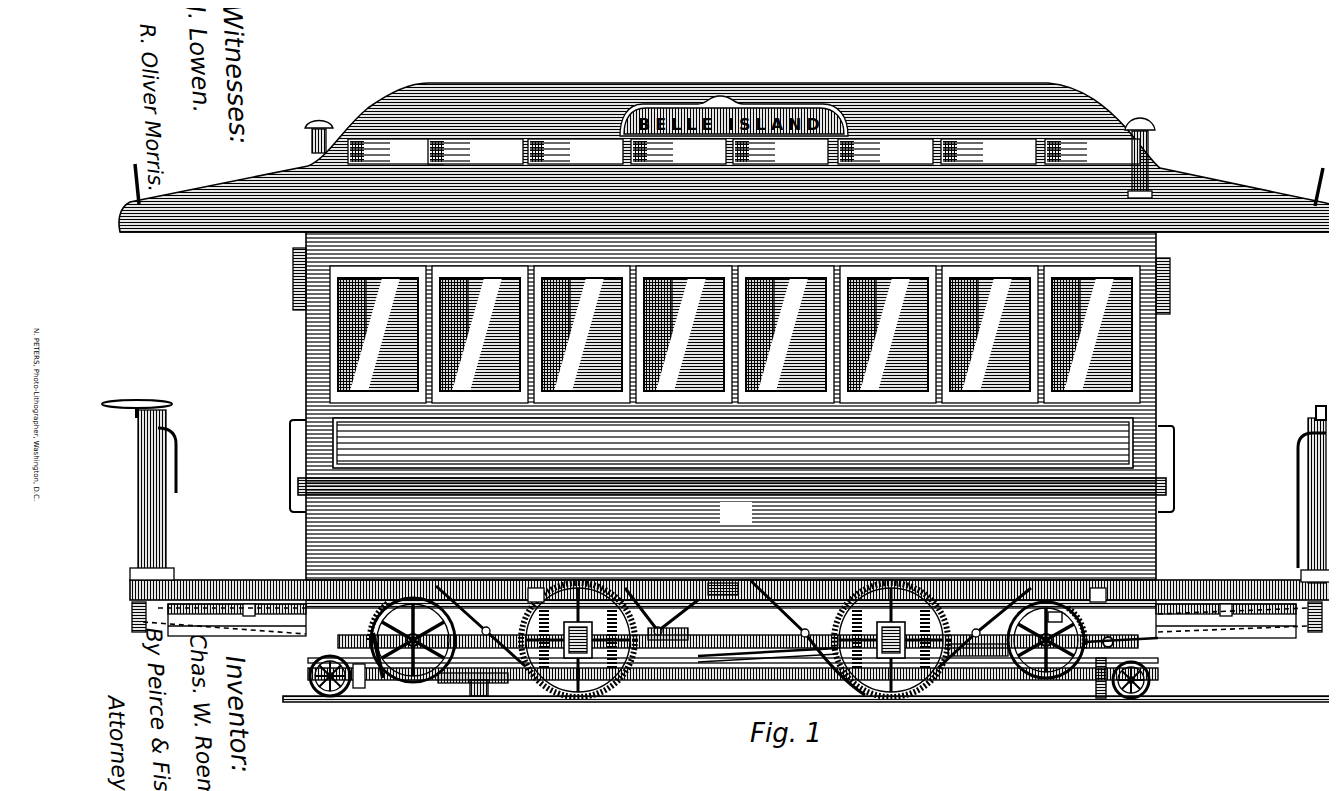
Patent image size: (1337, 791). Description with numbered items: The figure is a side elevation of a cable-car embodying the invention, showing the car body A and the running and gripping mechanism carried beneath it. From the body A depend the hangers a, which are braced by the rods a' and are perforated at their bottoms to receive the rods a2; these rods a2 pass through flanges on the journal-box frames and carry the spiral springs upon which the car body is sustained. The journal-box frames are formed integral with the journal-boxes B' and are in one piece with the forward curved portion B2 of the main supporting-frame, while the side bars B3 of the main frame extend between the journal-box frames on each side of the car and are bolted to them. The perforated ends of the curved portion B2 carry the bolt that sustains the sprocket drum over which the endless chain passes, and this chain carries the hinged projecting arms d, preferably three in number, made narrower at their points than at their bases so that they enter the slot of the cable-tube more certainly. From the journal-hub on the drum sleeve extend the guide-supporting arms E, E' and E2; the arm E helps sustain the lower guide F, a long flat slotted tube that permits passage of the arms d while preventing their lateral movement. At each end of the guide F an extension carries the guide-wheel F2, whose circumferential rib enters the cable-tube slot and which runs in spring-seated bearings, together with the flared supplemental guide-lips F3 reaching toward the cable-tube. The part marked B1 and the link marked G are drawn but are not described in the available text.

The body of the cable-car A is at (732, 406).
The hangers a is at (765, 634).
The rods a' is at (702, 638).
The rods a2 is at (623, 611).
The journal-boxes B' is at (891, 640).
The pivot link B1 is at (984, 628).
The forward curved portion of the main supporting-frame B2 is at (578, 640).
The side bars of the main frame B3 is at (738, 629).
The projecting arms d is at (466, 686).
The guide-supporting arm E is at (733, 678).
The guide-supporting arm E' is at (1046, 640).
The guide-supporting arm E2 is at (1055, 616).
The lower guide F is at (733, 682).
The guide-wheel F2 is at (1139, 680).
The supplemental guide-lips F3 is at (1109, 675).
The connecting link G is at (1121, 637).